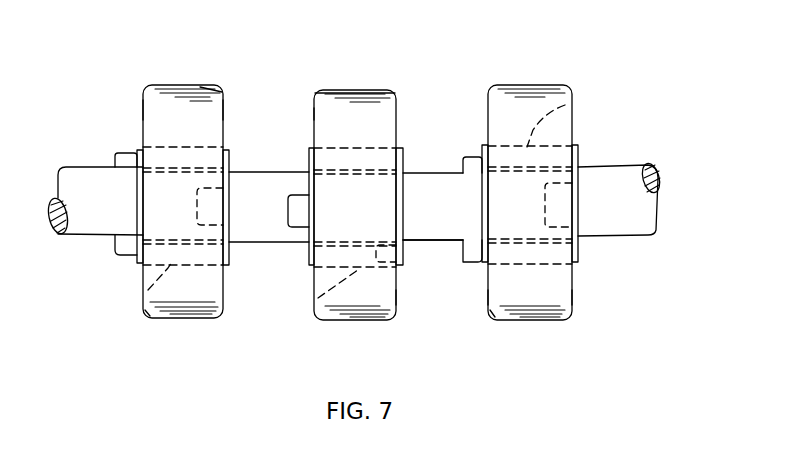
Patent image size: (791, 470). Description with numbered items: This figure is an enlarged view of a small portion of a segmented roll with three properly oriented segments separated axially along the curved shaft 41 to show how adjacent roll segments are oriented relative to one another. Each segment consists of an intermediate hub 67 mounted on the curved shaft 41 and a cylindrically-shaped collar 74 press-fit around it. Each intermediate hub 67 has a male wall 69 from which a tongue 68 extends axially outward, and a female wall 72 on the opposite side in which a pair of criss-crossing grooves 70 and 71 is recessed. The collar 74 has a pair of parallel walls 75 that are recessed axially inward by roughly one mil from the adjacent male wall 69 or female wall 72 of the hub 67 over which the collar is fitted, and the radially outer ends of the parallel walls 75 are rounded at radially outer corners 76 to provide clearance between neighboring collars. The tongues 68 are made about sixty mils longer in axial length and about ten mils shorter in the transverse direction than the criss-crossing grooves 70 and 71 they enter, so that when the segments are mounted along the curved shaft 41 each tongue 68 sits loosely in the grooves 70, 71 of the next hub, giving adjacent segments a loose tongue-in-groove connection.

The curved shaft 41 is at (365, 212).
The intermediate hub 67 is at (147, 291).
The tongue 68 is at (115, 255).
The male wall 69 is at (135, 154).
The criss-crossing groove 70 is at (403, 250).
The criss-crossing groove 71 is at (229, 215).
The female wall 72 is at (230, 151).
The cylindrically-shaped collar 74 is at (193, 85).
The parallel walls 75 is at (143, 107).
The radially outer corners 76 is at (224, 91).